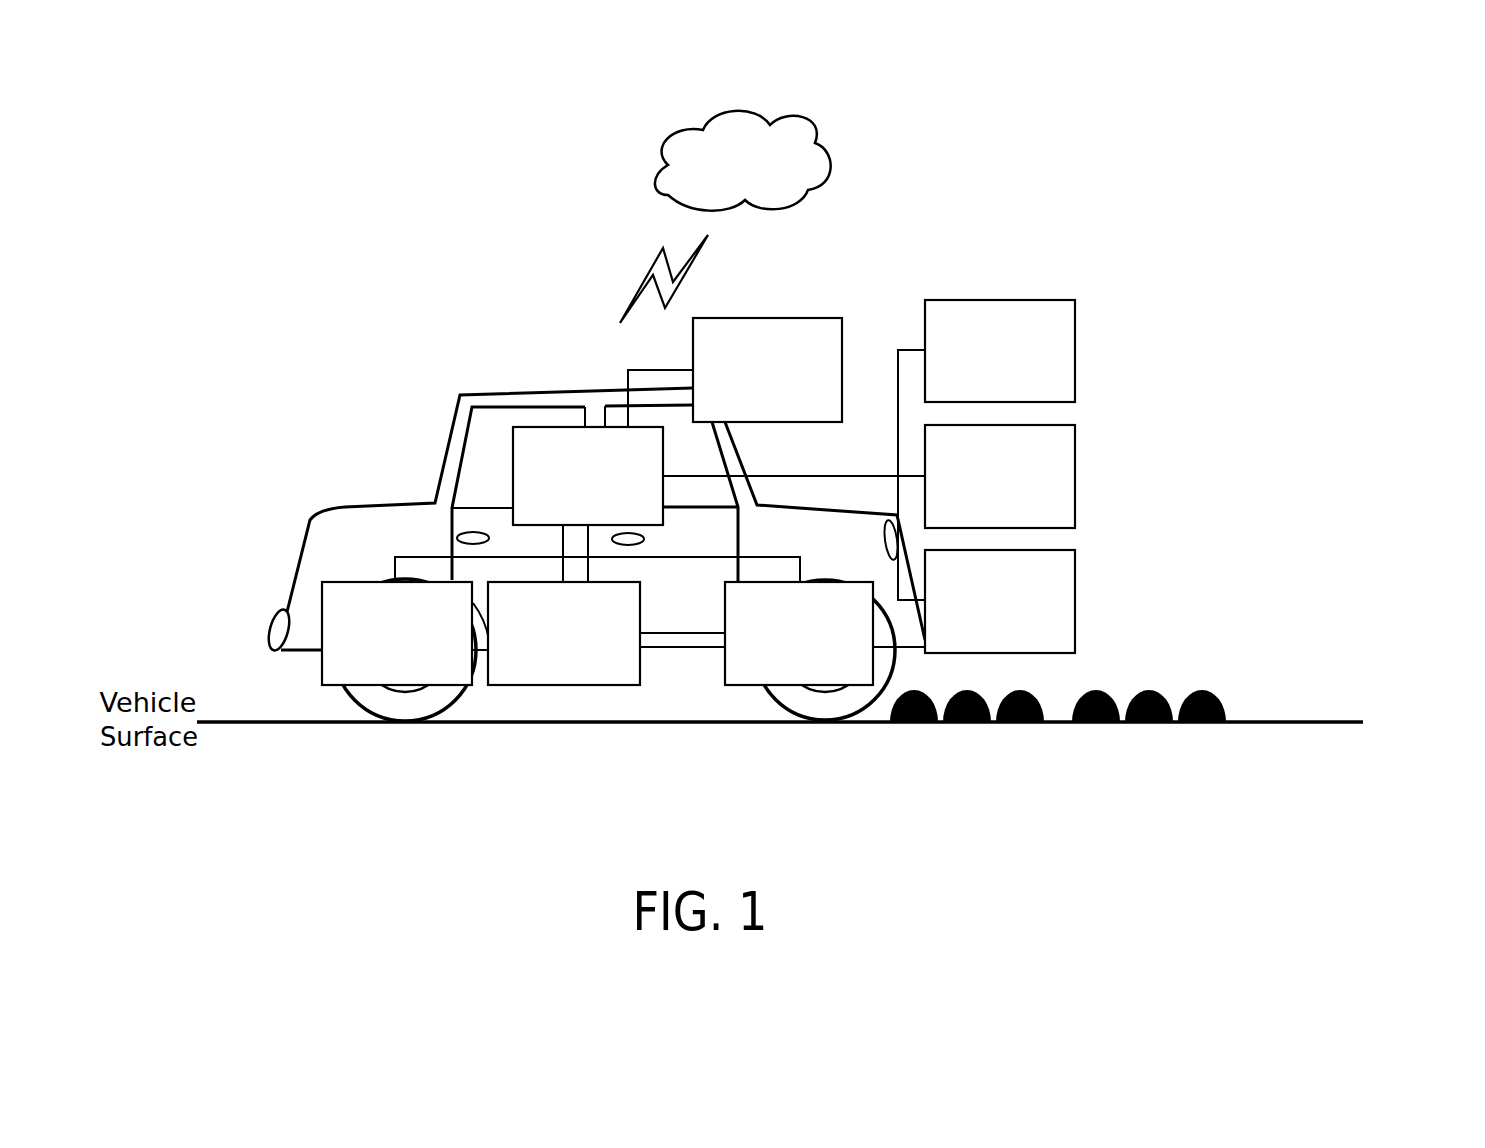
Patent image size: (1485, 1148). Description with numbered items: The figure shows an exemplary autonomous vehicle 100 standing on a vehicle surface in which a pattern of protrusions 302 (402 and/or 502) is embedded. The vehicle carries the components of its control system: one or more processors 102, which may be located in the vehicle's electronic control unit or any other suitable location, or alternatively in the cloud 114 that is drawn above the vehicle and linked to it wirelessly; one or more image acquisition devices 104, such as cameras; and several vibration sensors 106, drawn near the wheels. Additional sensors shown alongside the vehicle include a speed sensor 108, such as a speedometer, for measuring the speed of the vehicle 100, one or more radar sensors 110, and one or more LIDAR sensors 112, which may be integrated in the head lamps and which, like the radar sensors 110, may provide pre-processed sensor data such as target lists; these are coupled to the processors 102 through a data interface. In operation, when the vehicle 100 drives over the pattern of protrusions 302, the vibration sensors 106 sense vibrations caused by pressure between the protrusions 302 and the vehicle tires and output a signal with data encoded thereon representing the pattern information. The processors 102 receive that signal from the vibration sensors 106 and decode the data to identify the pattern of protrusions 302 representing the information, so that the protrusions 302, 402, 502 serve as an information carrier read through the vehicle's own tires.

The autonomous vehicle 100 is at (1151, 98).
The processor 102 is at (588, 476).
The image acquisition device 104 is at (767, 370).
The vibration sensor 106 is at (597, 633).
The speed sensor 108 is at (1000, 351).
The radar sensor 110 is at (1000, 476).
The LIDAR sensor 112 is at (1000, 601).
The cloud 114 is at (725, 217).
The protrusions 302 is at (1180, 638).
The protrusions 402 is at (1180, 638).
The protrusions 502 is at (1168, 636).